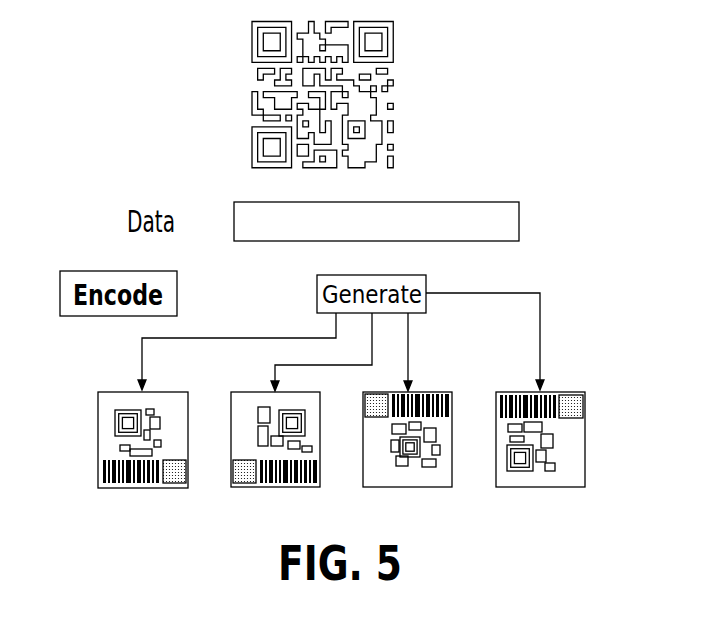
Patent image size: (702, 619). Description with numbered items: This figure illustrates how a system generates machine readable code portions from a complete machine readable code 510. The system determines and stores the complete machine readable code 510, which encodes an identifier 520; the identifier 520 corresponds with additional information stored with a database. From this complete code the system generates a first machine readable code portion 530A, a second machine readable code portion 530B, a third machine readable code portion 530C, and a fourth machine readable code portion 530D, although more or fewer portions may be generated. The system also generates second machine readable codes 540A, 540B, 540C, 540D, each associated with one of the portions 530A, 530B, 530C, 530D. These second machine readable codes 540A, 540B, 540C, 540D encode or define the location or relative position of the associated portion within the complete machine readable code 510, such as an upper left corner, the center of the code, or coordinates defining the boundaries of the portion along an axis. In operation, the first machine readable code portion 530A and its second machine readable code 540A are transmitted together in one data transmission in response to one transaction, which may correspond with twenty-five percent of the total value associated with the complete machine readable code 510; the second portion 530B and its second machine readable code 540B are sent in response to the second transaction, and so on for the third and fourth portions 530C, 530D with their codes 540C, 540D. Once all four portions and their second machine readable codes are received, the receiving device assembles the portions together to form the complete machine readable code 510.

The complete machine readable code 510 is at (393, 94).
The identifier 520 is at (455, 202).
The first machine readable code portion 530A is at (114, 431).
The second machine readable code 540A is at (103, 463).
The second machine readable code portion 530B is at (262, 410).
The second machine readable code 540B is at (284, 486).
The third machine readable code portion 530C is at (413, 466).
The second machine readable code 540C is at (426, 396).
The fourth machine readable code portion 530D is at (520, 470).
The second machine readable code 540D is at (555, 395).